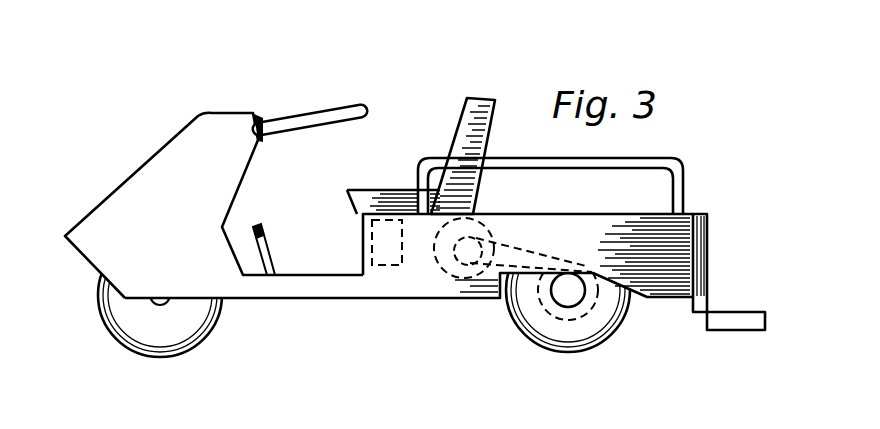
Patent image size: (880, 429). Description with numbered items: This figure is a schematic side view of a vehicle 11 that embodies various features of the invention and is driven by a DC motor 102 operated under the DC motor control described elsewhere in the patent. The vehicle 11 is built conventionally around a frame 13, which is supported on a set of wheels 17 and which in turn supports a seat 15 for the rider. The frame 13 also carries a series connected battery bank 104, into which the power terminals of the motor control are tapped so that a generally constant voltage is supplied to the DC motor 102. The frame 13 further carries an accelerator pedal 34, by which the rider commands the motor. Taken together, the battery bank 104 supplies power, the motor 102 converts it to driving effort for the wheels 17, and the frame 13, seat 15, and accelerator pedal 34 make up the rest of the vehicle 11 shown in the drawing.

The vehicle 11 is at (150, 143).
The frame 13 is at (293, 287).
The seat 15 is at (373, 190).
The wheels 17 is at (104, 300).
The accelerator pedal 34 is at (263, 233).
The DC motor 102 is at (478, 220).
The battery bank 104 is at (392, 262).